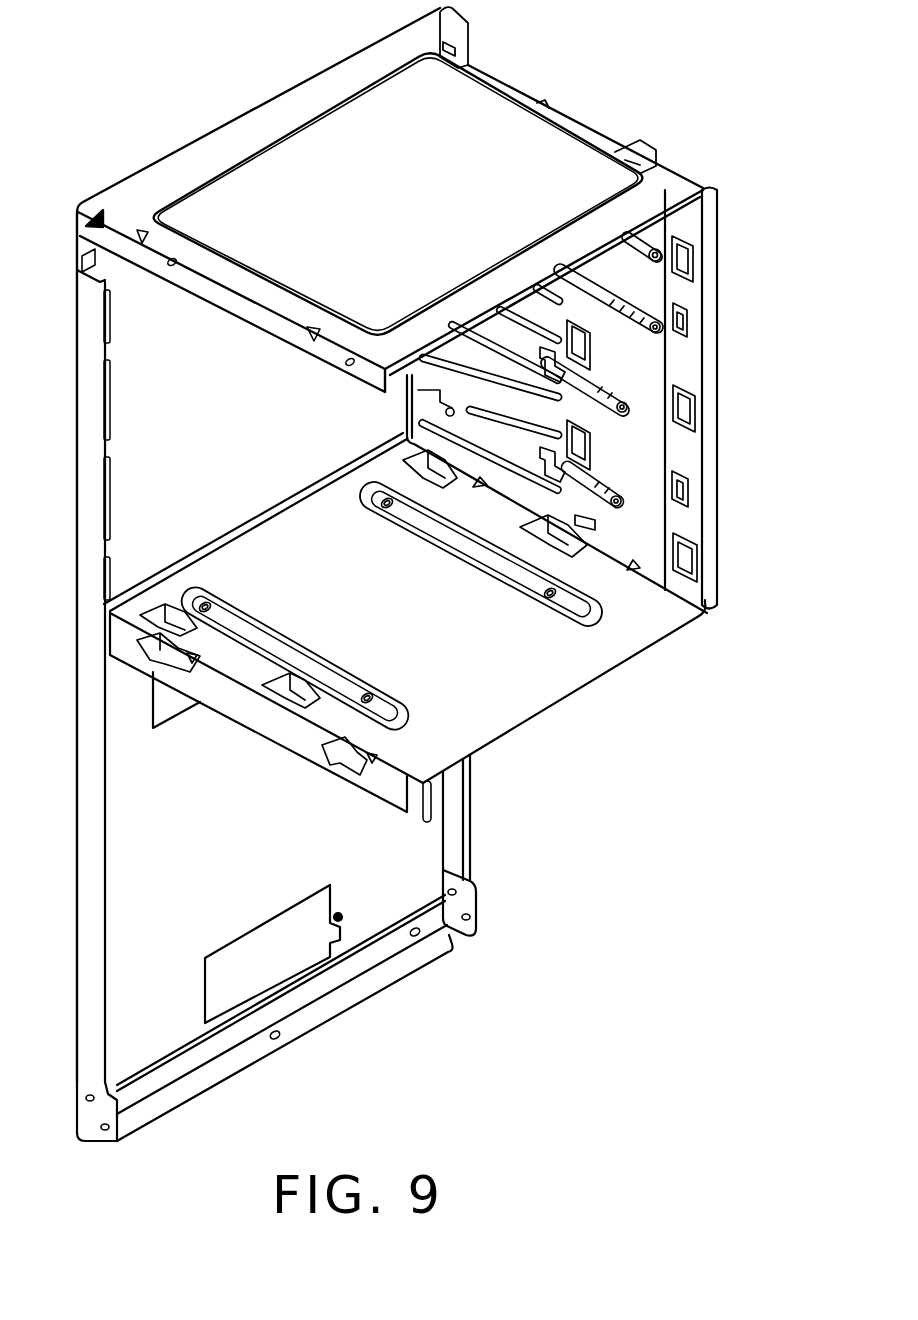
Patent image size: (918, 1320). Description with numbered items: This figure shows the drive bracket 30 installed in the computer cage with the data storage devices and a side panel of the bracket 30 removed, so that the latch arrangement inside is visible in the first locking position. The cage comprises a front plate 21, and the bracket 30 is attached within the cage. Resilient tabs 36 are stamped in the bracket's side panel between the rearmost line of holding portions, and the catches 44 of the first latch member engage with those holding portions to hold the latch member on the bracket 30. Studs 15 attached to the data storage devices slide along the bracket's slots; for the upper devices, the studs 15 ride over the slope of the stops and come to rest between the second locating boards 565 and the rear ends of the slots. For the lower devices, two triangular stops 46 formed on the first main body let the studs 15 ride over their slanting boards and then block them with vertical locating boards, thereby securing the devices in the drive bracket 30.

The drive bracket 30 is at (473, 72).
The second locating board 565 is at (667, 232).
The stud 15 is at (657, 254).
The resilient tab 36 is at (690, 318).
The stop 46 is at (612, 390).
The catch 44 is at (700, 407).
The front plate 21 is at (430, 846).